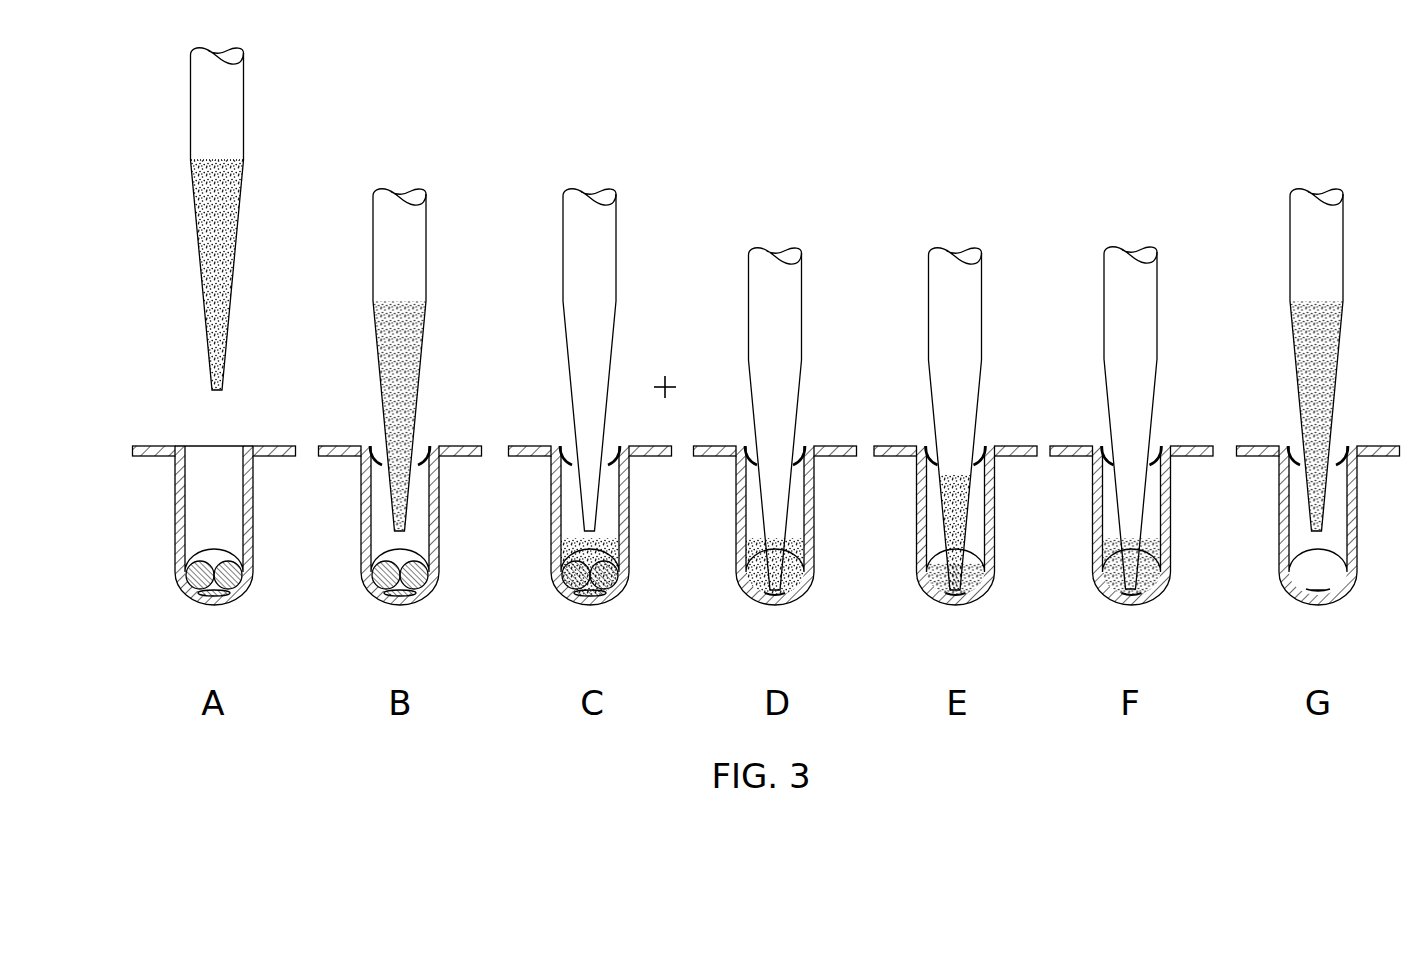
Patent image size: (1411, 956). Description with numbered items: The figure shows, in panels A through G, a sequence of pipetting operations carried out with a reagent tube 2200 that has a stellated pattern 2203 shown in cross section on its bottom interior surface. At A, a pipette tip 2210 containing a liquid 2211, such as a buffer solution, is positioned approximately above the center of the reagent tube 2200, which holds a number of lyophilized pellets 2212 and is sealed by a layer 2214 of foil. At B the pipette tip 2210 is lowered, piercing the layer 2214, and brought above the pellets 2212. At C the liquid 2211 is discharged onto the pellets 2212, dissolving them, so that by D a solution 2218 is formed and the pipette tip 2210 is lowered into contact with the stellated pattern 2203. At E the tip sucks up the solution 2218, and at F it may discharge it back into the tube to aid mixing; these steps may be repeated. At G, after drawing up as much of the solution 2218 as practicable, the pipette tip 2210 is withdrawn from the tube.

The reagent tube 2200 is at (253, 518).
The stellated pattern 2203 is at (220, 595).
The pipette tip 2210 is at (243, 107).
The liquid 2211 is at (232, 247).
The lyophilized pellets 2212 is at (200, 578).
The layer 2214 is at (145, 446).
The solution 2218 is at (814, 566).